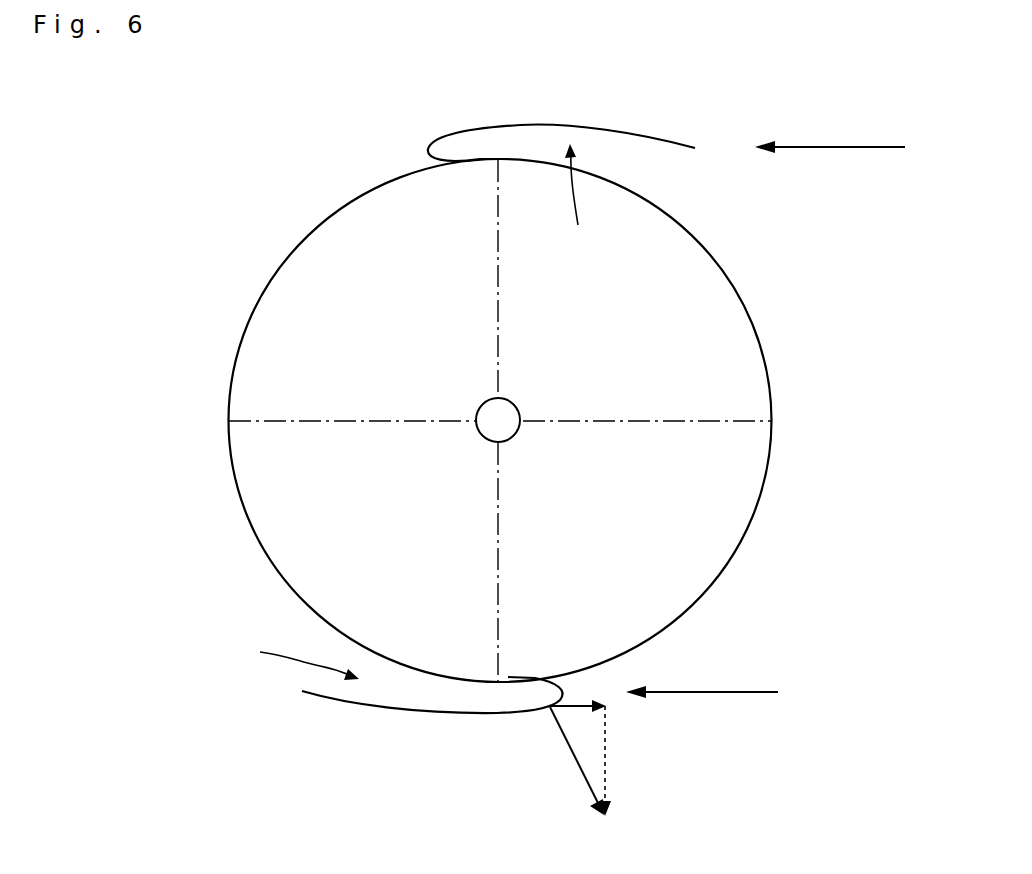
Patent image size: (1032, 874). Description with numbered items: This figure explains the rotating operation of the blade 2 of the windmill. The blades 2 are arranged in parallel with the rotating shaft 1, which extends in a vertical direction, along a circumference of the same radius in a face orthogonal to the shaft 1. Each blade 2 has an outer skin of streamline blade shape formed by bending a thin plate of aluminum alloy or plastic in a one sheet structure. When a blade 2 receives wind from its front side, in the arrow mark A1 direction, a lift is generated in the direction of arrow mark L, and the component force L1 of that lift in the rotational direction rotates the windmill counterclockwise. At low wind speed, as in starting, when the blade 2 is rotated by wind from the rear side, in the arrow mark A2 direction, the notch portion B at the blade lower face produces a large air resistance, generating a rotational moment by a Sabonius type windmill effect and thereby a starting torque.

The rotating shaft 1 is at (515, 438).
The blade 2 is at (562, 125).
The arrow mark A1 direction A1 is at (703, 694).
The arrow mark A2 direction A2 is at (837, 146).
The notch portion B is at (411, 412).
The lift L is at (577, 761).
The component force in the rotational direction L1 is at (594, 758).